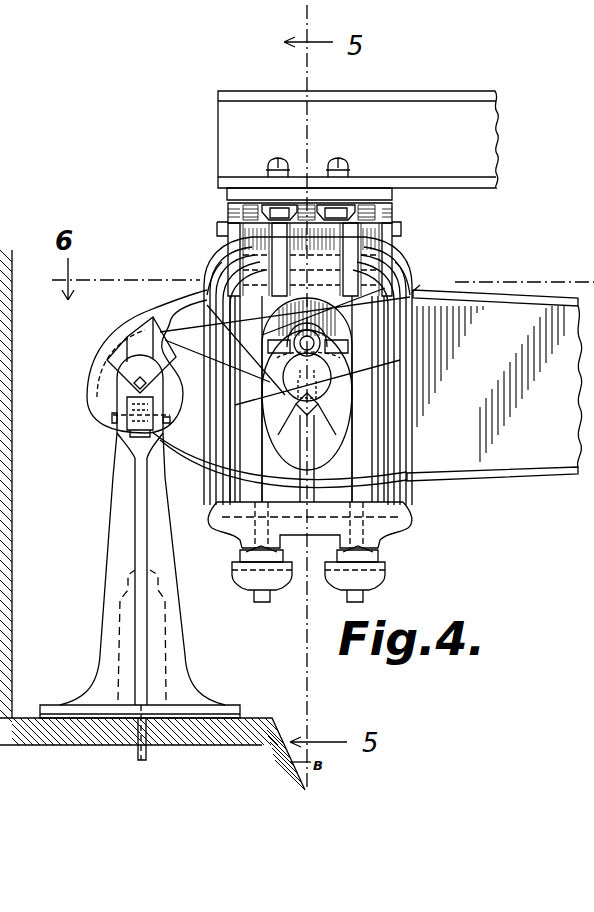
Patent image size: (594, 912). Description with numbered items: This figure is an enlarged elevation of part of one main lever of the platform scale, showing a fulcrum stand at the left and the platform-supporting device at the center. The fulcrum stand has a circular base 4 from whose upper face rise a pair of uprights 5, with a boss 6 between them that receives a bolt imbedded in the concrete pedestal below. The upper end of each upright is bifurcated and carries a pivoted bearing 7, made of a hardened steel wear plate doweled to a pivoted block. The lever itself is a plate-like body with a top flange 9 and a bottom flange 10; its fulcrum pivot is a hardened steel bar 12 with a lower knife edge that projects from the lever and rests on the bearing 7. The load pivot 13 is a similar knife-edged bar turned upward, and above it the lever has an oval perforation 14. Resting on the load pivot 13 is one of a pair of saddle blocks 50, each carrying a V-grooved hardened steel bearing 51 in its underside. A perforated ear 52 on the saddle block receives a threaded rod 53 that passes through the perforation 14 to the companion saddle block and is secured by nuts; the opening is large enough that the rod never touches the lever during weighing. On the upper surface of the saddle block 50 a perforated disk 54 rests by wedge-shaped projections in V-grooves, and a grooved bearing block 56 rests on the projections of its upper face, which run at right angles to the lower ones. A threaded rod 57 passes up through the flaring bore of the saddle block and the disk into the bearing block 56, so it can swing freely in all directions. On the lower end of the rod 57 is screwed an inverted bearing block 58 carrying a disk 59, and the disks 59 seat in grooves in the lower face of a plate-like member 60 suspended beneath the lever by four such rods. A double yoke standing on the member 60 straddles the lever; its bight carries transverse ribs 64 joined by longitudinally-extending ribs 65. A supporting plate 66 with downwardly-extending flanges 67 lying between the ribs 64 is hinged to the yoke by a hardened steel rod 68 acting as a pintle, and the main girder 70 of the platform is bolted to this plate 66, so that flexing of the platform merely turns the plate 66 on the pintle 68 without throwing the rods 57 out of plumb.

The circular base 4 is at (205, 712).
The uprights 5 is at (163, 552).
The boss 6 is at (107, 622).
The pivoted bearing 7 is at (120, 425).
The top flange 9 is at (505, 292).
The bottom flange 10 is at (465, 480).
The fulcrum pivot bar 12 is at (134, 385).
The load pivot 13 is at (332, 395).
The oval perforation 14 is at (414, 270).
The saddle block 50 is at (183, 327).
The V-grooved hardened steel bearing 51 is at (240, 417).
The perforated ear 52 is at (294, 338).
The threaded rod 53 is at (205, 365).
The perforated disk 54 is at (207, 348).
The bearing block 56 is at (430, 285).
The threaded rod 57 is at (402, 460).
The bearing block 58 is at (382, 572).
The disk 59 is at (378, 556).
The plate-like member 60 is at (402, 518).
The ribs 64 is at (395, 246).
The longitudinally-extending ribs 65 is at (218, 268).
The supporting plate 66 is at (232, 199).
The downwardly-extending flanges 67 is at (228, 224).
The hardened steel rod 68 is at (402, 232).
The main girder 70 is at (430, 115).